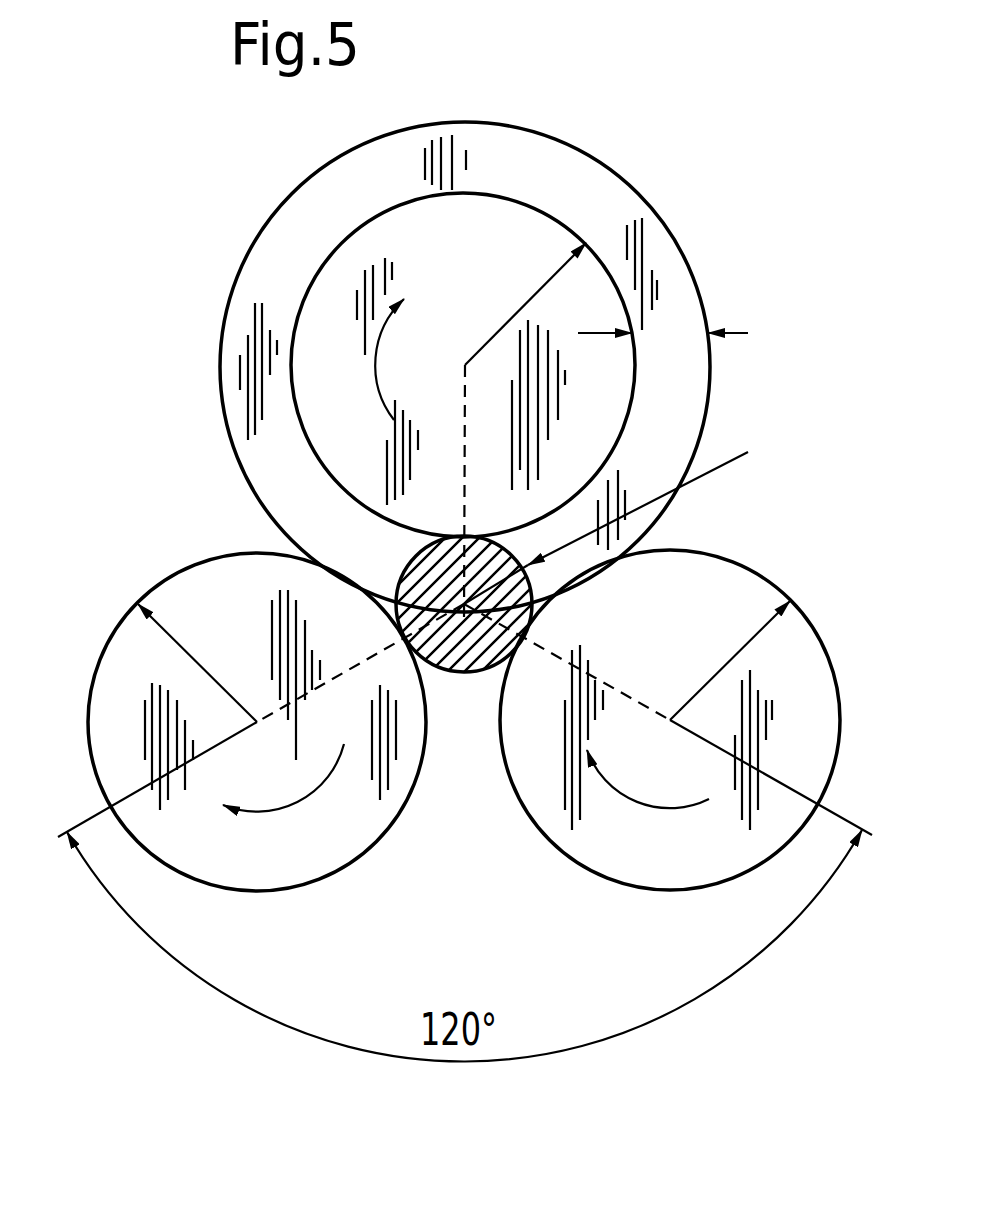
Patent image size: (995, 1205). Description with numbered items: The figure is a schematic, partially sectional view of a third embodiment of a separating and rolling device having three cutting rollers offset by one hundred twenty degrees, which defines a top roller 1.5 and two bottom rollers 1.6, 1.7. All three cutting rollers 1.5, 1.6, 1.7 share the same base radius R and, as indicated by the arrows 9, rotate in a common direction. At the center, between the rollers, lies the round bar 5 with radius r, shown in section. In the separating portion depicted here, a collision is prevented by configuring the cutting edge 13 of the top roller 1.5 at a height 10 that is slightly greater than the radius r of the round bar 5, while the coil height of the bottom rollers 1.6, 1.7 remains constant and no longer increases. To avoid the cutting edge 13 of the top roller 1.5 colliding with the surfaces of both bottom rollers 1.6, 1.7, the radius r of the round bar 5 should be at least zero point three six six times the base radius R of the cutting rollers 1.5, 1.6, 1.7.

The top roller 1.5 is at (313, 345).
The bottom roller 1.6 is at (760, 752).
The bottom roller 1.7 is at (107, 717).
The round bar 5 is at (403, 577).
The arrows 9 is at (382, 405).
The height 10 is at (665, 333).
The cutting edge 13 is at (482, 375).